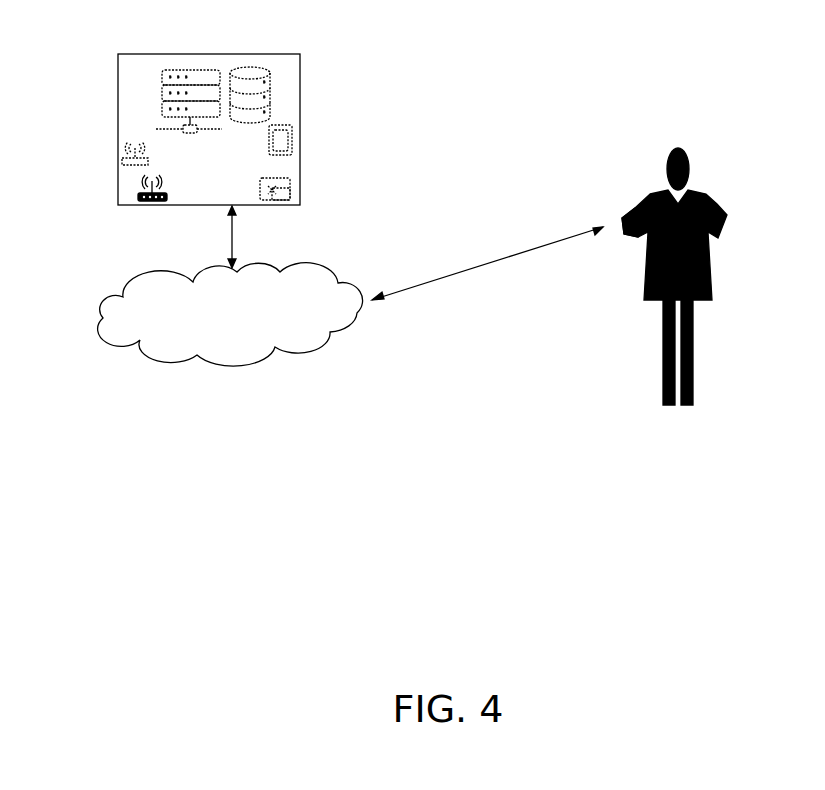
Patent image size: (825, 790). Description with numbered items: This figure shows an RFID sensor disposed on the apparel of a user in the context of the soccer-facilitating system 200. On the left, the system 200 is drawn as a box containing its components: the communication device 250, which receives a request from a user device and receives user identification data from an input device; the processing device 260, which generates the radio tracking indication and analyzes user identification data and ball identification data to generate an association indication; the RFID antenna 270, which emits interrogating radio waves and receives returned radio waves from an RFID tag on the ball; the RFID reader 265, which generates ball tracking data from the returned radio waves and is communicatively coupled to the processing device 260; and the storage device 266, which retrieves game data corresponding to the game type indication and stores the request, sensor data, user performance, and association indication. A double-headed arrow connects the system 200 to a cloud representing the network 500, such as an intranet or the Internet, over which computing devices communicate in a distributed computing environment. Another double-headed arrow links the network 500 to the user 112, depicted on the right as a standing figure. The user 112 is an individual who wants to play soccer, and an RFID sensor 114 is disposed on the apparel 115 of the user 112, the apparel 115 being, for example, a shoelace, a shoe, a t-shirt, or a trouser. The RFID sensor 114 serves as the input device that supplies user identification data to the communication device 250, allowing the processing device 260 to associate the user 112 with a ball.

The system 200 is at (209, 129).
The storage device 266 is at (264, 72).
The processing device 260 is at (292, 140).
The RFID reader 265 is at (291, 188).
The RFID antenna 270 is at (122, 159).
The communication device 250 is at (142, 202).
The network 500 is at (230, 314).
The user 112 is at (681, 150).
The RFID sensor 114 is at (616, 218).
The apparel 115 is at (728, 215).